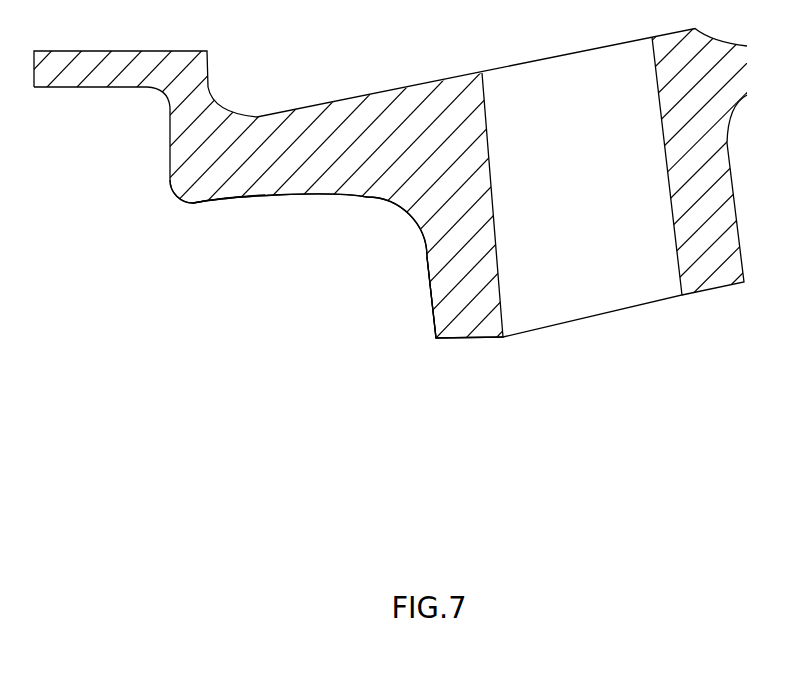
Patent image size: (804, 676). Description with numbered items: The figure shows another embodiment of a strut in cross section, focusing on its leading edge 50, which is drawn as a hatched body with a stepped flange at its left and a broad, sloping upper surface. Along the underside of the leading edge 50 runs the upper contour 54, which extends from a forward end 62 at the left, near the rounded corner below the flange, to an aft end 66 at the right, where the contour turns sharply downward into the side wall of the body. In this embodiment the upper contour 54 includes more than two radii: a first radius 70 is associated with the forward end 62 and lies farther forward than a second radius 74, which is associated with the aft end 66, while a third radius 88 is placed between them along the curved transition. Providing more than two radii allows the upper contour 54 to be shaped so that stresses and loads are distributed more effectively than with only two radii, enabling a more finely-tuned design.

The leading edge 50 is at (253, 338).
The upper contour 54 is at (347, 196).
The forward end 62 is at (212, 199).
The aft end 66 is at (430, 260).
The first radius 70 is at (260, 238).
The second radius 74 is at (397, 280).
The third radius 88 is at (365, 232).